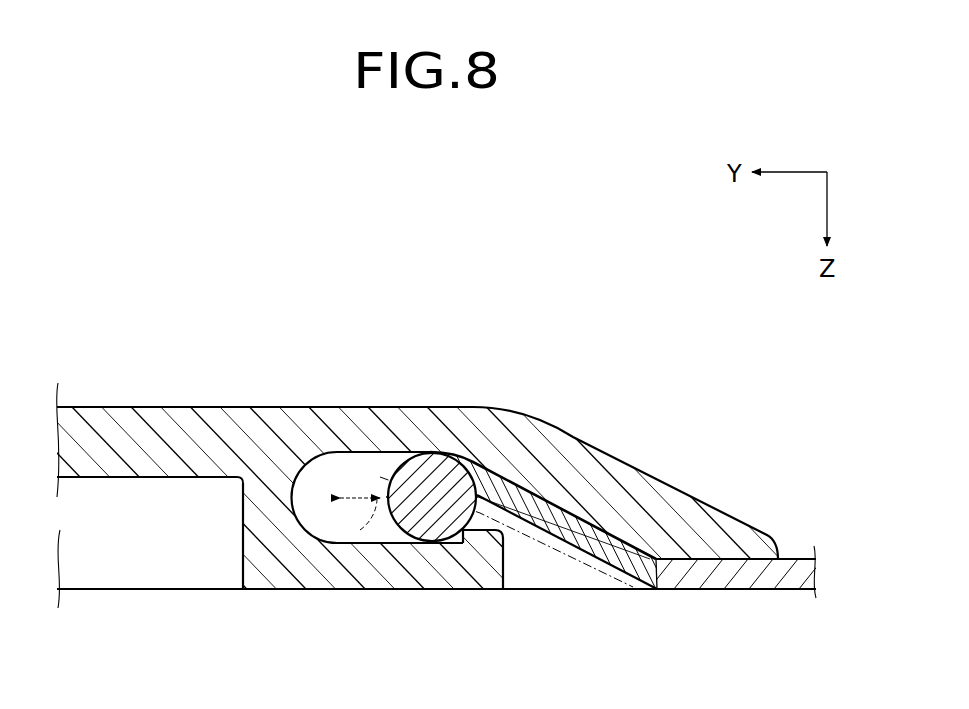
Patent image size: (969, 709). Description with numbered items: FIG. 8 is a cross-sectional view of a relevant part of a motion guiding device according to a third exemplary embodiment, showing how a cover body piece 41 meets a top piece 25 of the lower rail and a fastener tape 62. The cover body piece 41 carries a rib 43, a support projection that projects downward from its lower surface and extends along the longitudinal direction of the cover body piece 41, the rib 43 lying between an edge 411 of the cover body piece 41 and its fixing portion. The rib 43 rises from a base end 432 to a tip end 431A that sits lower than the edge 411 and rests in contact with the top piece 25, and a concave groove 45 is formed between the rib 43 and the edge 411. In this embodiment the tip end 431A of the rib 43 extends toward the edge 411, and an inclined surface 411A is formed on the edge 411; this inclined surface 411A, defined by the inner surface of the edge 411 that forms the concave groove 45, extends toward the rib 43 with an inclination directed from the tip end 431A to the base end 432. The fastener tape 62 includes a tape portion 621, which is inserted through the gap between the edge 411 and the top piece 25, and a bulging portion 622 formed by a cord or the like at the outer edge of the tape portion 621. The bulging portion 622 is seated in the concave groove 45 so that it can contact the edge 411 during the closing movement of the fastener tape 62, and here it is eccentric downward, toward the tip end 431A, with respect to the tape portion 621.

The cover body piece 41 is at (143, 407).
The edge 411 is at (735, 527).
The inclined surface 411A is at (583, 515).
The rib 43 is at (243, 537).
The tip end 431A is at (437, 580).
The base end 432 is at (267, 468).
The concave groove 45 is at (360, 471).
The top piece 25 is at (160, 589).
The fastener tape 62 is at (783, 589).
The tape portion 621 is at (764, 589).
The bulging portion 622 is at (382, 500).